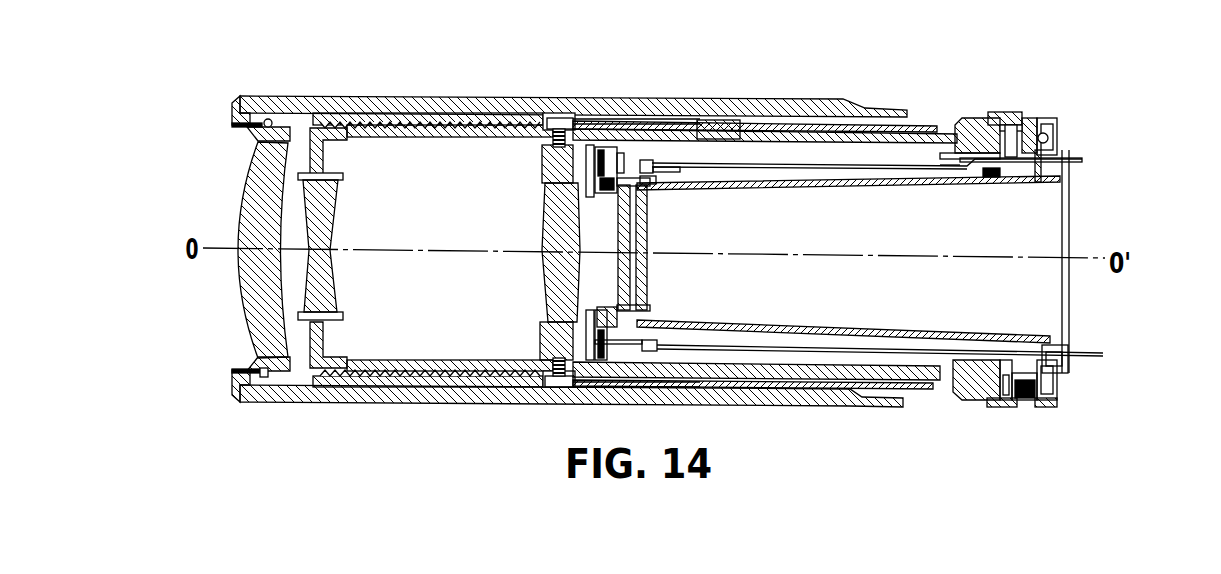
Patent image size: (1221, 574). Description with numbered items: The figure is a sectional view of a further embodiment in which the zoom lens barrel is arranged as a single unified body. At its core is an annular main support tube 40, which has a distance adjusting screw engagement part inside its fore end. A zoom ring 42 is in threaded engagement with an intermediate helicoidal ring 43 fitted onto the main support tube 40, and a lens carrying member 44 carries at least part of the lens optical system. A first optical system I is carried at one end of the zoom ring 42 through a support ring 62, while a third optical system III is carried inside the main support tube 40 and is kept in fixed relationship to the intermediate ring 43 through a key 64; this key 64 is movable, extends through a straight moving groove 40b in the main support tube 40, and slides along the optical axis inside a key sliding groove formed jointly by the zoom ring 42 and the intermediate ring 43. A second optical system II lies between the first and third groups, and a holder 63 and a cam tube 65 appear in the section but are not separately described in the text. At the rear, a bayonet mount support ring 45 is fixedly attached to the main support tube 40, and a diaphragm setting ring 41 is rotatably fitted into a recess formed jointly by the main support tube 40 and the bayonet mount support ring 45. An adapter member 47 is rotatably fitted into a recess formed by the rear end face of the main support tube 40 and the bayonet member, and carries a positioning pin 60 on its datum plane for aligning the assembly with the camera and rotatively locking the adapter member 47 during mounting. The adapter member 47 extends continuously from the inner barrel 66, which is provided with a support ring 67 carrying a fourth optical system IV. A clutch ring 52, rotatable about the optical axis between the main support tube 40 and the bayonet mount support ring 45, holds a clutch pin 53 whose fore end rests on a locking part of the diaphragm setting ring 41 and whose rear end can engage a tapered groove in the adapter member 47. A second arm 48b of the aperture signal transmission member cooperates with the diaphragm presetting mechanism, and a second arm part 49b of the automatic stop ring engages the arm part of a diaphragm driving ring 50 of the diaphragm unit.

The main support tube 40 is at (783, 133).
The straight moving groove 40b is at (462, 138).
The diaphragm setting ring 41 is at (1000, 112).
The zoom ring 42 is at (680, 106).
The intermediate helicoidal ring 43 is at (372, 113).
The lens carrying member 44 is at (313, 128).
The bayonet mount support ring 45 is at (973, 122).
The adapter member 47 is at (1042, 130).
The second arm 48b is at (1082, 158).
The second arm part 49b is at (1103, 353).
The diaphragm driving ring 50 is at (592, 145).
The clutch ring 52 is at (1020, 360).
The clutch pin 53 is at (1057, 396).
The positioning pin 60 is at (1050, 138).
The support ring 62 is at (262, 372).
The lens holder 63 is at (542, 180).
The key 64 is at (565, 116).
The cam tube 65 is at (637, 121).
The inner barrel 66 is at (810, 190).
The support ring 67 is at (602, 195).
The first optical system I is at (268, 305).
The second lens group II is at (365, 294).
The third optical system III is at (548, 280).
The fourth optical system IV is at (640, 240).